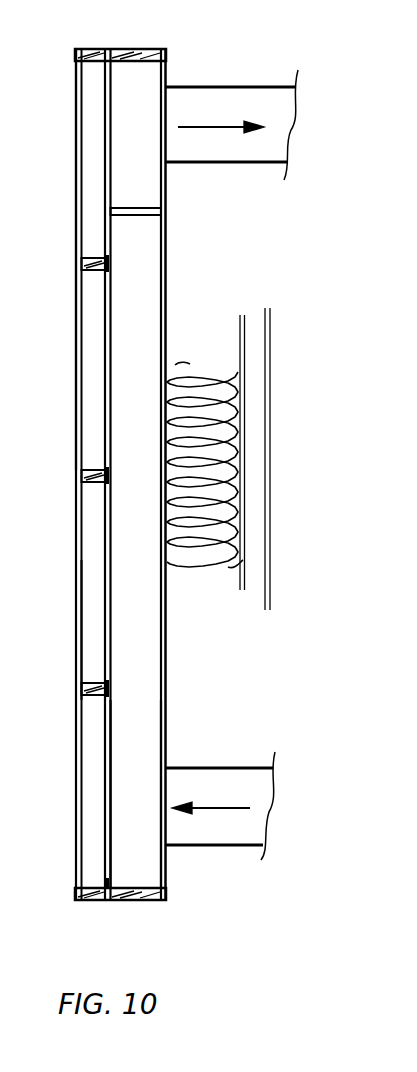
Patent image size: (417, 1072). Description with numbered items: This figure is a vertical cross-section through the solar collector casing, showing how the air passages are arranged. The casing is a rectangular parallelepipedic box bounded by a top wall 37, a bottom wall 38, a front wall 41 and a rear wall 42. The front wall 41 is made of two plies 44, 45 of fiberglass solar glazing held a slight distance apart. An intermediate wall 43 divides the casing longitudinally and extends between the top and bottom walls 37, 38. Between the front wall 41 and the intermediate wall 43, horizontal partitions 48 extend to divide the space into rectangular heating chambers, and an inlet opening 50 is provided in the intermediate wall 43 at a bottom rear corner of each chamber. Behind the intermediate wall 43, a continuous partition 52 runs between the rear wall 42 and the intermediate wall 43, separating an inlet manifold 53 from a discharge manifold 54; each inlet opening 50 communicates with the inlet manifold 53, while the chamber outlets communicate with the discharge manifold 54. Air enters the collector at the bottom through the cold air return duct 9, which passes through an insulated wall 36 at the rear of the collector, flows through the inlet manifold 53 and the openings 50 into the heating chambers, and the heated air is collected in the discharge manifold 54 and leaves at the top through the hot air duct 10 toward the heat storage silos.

The cold air return duct 9 is at (249, 766).
The hot air duct 10 is at (263, 86).
The insulated wall 36 is at (255, 465).
The top wall 37 is at (132, 50).
The bottom wall 38 is at (118, 900).
The front wall 41 is at (76, 460).
The rear wall 42 is at (165, 678).
The intermediate wall 43 is at (110, 603).
The ply of solar glazing 44 is at (76, 551).
The ply of solar glazing 45 is at (80, 647).
The horizontal partition 48 is at (92, 262).
The inlet opening 50 is at (108, 262).
The continuous partition 52 is at (150, 209).
The inlet manifold 53 is at (140, 742).
The discharge manifold 54 is at (140, 74).